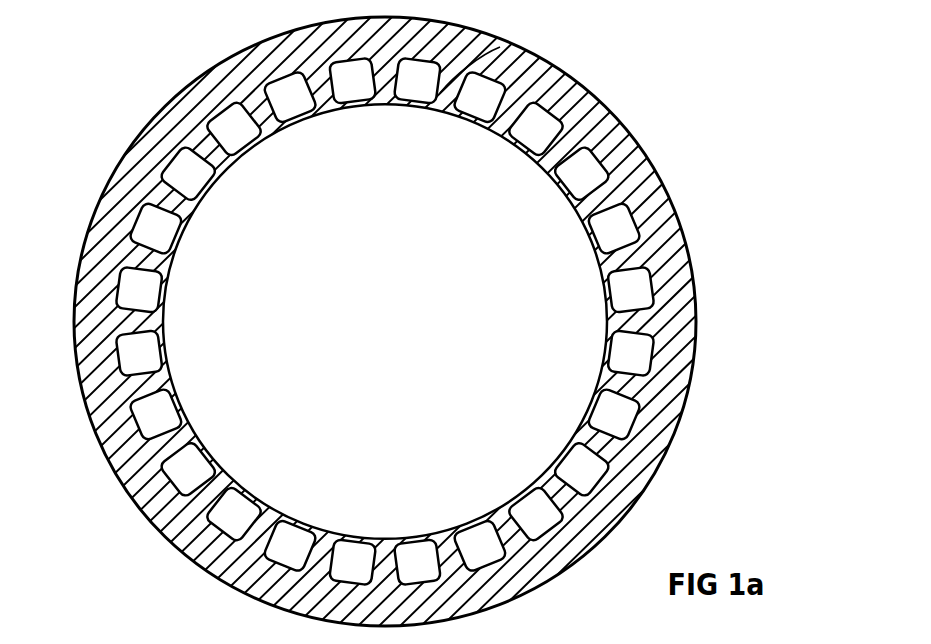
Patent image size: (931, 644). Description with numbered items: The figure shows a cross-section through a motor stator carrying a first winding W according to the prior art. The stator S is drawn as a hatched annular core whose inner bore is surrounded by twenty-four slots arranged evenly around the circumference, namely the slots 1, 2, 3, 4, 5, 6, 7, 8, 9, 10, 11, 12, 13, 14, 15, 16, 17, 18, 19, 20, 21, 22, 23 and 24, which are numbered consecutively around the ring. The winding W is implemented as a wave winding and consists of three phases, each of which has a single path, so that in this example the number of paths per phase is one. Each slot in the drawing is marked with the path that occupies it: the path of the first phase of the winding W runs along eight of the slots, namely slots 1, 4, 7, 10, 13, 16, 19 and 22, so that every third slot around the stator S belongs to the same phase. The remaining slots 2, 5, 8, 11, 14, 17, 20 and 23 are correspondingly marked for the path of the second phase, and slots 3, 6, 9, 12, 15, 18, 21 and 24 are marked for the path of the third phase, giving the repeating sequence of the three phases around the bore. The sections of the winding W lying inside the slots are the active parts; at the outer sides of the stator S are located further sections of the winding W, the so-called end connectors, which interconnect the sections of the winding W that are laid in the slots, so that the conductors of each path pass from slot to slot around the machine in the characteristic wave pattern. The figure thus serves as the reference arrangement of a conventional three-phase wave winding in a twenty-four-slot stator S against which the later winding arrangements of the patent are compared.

The stator S is at (633, 178).
The winding W is at (257, 47).
The slot 1 is at (414, 106).
The slot 2 is at (470, 121).
The slot 3 is at (520, 149).
The slot 4 is at (561, 189).
The slot 5 is at (590, 238).
The slot 6 is at (605, 293).
The slot 7 is at (605, 350).
The slot 8 is at (590, 405).
The slot 9 is at (561, 454).
The slot 10 is at (520, 494).
The slot 11 is at (470, 522).
The slot 12 is at (414, 537).
The slot 13 is at (356, 537).
The slot 14 is at (300, 522).
The slot 15 is at (250, 494).
The slot 16 is at (209, 454).
The slot 17 is at (180, 405).
The slot 18 is at (165, 350).
The slot 19 is at (165, 293).
The slot 20 is at (180, 238).
The slot 21 is at (209, 189).
The slot 22 is at (250, 149).
The slot 23 is at (300, 121).
The slot 24 is at (356, 106).